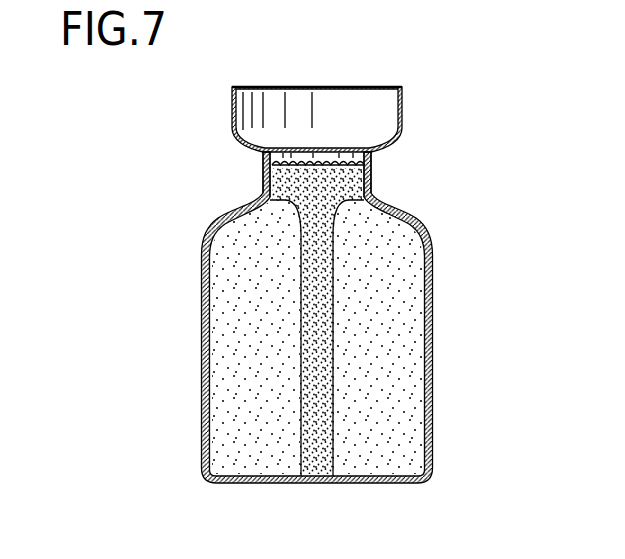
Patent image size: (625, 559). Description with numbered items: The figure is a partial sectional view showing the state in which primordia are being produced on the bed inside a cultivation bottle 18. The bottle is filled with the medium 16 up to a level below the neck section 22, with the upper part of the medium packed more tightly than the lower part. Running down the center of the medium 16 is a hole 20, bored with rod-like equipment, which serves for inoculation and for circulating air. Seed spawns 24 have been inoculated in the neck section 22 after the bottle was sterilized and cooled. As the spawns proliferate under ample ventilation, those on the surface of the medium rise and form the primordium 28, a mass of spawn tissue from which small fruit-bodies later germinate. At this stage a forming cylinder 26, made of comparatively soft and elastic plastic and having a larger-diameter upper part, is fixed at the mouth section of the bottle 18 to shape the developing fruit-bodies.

The medium 16 is at (407, 335).
The cultivation bottle 18 is at (432, 256).
The hole 20 is at (325, 460).
The neck section 22 is at (262, 190).
The seed spawns 24 is at (366, 180).
The forming cylinder 26 is at (403, 112).
The primordium 28 is at (325, 163).